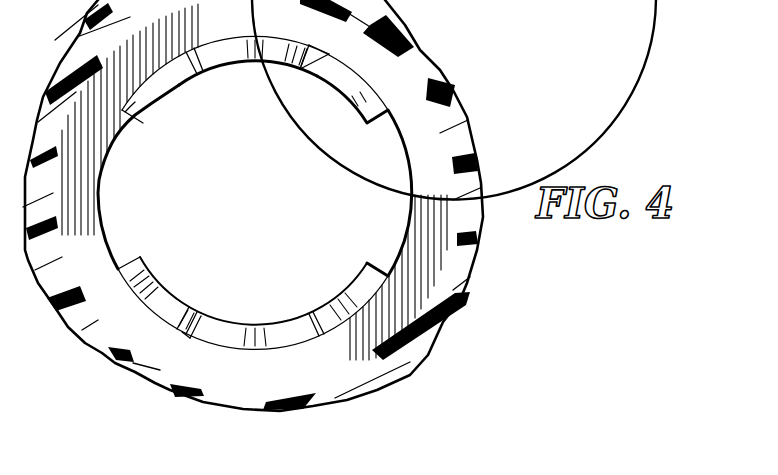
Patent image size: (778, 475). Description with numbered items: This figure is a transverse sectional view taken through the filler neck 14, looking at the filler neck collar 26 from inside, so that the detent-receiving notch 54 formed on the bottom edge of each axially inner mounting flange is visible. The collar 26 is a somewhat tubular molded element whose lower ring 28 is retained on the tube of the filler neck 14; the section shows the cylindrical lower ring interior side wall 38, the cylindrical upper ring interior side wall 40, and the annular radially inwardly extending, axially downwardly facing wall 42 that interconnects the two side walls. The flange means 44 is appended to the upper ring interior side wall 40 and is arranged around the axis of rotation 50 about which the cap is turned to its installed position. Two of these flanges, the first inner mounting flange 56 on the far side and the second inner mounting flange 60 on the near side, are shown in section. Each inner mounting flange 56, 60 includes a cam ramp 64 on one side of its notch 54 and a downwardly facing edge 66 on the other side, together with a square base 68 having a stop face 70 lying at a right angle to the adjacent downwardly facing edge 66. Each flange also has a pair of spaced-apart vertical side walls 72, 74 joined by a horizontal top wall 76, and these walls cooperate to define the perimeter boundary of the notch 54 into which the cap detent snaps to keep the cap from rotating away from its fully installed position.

The filler neck 14 is at (64, 20).
The filler neck collar 26 is at (476, 49).
The lower ring 28 is at (466, 137).
The lower ring interior side wall 38 is at (63, 243).
The upper ring interior side wall 40 is at (104, 183).
The annular wall 42 is at (80, 215).
The flange means 44 is at (251, 84).
The axis of rotation 50 is at (252, 193).
The detent-receiving notch 54 is at (334, 47).
The first inner mounting flange 56 is at (343, 268).
The second inner mounting flange 60 is at (316, 122).
The cam ramp 64 is at (348, 90).
The downwardly facing edge 66 is at (265, 68).
The square base 68 is at (143, 116).
The stop face 70 is at (200, 66).
The vertical side wall 72 is at (307, 56).
The vertical side wall 74 is at (313, 65).
The horizontal top wall 76 is at (287, 53).